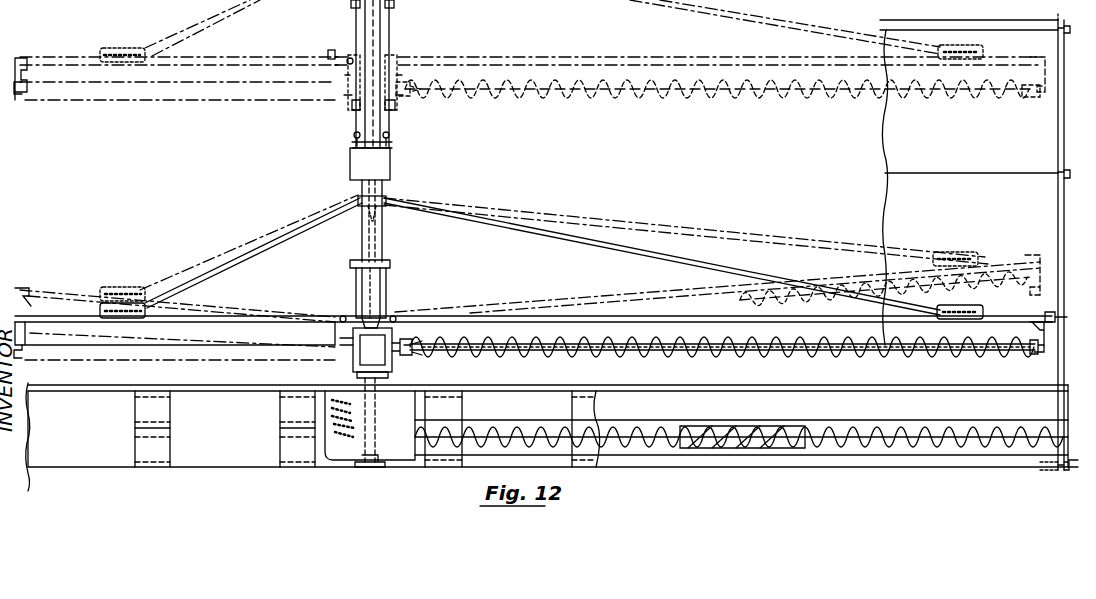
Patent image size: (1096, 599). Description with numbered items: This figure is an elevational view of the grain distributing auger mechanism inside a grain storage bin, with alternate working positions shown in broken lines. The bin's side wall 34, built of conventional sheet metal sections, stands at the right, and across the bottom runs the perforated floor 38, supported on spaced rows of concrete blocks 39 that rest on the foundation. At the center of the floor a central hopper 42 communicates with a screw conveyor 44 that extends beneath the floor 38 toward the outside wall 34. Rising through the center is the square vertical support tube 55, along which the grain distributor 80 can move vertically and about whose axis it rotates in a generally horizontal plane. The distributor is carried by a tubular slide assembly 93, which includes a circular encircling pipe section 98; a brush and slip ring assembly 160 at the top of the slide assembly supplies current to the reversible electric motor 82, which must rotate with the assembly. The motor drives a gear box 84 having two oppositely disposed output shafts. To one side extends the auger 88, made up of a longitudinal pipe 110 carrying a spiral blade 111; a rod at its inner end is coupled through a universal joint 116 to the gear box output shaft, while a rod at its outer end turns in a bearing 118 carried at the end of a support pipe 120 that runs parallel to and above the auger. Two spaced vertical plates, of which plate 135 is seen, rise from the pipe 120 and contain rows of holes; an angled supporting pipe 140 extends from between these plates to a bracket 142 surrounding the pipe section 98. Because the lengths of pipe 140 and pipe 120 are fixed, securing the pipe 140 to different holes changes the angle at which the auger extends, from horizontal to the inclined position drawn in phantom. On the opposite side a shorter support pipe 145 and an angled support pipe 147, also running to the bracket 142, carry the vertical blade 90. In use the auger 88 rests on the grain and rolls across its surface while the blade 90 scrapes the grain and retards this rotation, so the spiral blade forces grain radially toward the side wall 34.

The side wall 34 is at (1058, 148).
The perforated floor 38 is at (106, 392).
The concrete blocks 39 is at (134, 452).
The central hopper 42 is at (340, 452).
The screw conveyor 44 is at (680, 430).
The vertical support tube 55 is at (355, 24).
The grain distributor 80 is at (395, 52).
The reversible electric motor 82 is at (352, 282).
The gear box 84 is at (360, 352).
The auger 88 is at (722, 358).
The vertical blade 90 is at (204, 350).
The tubular slide assembly 93 is at (396, 287).
The encircling pipe section 98 is at (362, 242).
The longitudinal pipe 110 is at (600, 350).
The spiral blade 111 is at (662, 355).
The universal joint 116 is at (406, 354).
The bearing 118 is at (1044, 354).
The support pipe 120 is at (606, 290).
The vertical plate 135 is at (975, 308).
The angled supporting pipe 140 is at (622, 226).
The bracket 142 is at (381, 214).
The shorter support pipe 145 is at (242, 317).
The angled support pipe 147 is at (222, 266).
The brush and slip ring assembly 160 is at (395, 177).